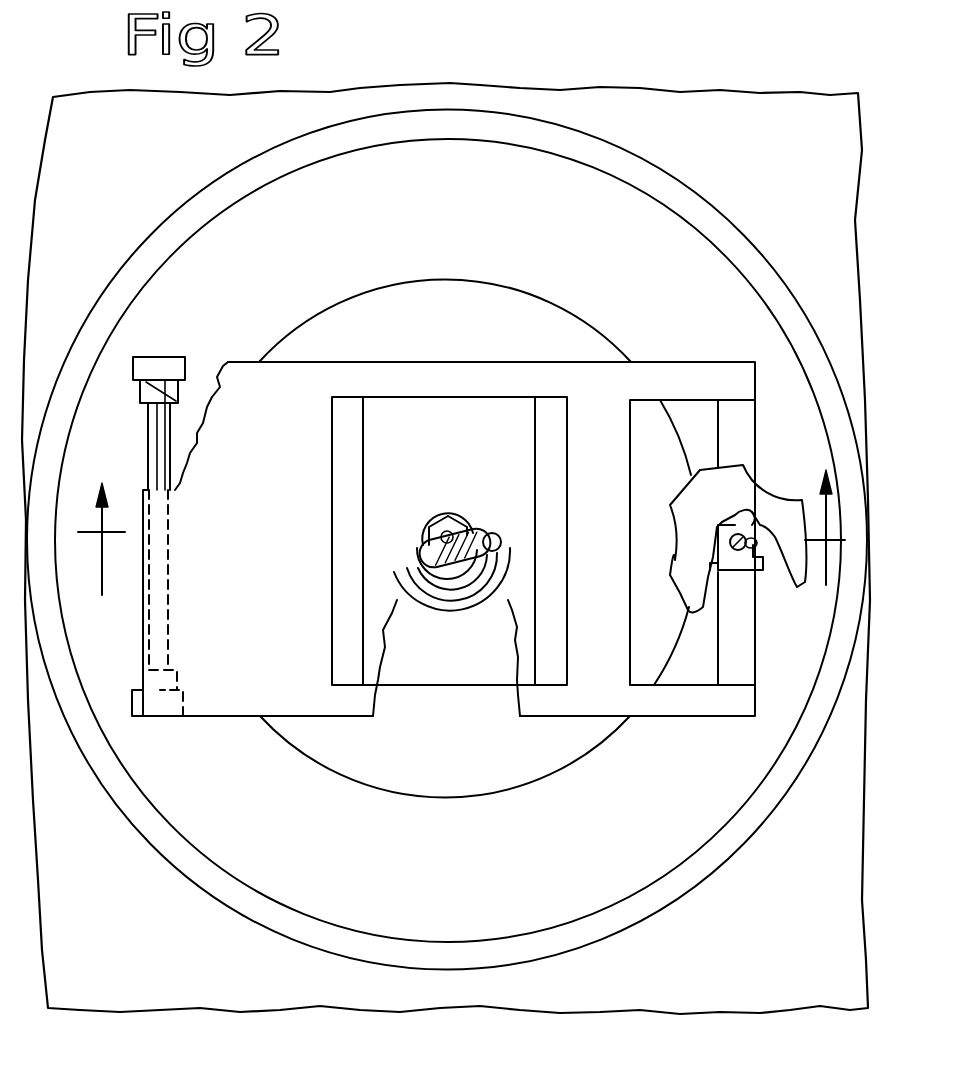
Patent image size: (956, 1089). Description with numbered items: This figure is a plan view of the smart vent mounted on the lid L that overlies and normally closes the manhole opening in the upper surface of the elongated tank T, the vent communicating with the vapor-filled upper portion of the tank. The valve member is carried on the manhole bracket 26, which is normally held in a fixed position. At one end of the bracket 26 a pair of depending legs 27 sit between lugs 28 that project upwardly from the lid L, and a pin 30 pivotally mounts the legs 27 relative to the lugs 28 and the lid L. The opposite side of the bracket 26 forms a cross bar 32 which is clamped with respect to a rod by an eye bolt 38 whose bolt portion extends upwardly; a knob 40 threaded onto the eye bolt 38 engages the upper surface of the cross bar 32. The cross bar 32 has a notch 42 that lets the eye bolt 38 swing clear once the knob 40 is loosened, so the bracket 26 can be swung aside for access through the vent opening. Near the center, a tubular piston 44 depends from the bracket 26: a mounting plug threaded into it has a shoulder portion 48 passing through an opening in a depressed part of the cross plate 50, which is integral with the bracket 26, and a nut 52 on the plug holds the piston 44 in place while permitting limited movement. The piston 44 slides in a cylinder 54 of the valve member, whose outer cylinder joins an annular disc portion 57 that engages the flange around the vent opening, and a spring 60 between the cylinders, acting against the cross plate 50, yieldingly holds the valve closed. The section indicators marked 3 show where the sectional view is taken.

The tank T is at (728, 978).
The lid L is at (667, 222).
The annular disc portion 57 is at (586, 758).
The manhole bracket 26 is at (682, 362).
The lugs 28 is at (165, 357).
The depending legs 27 is at (140, 403).
The pin 30 is at (171, 432).
The section line 3- 3 is at (821, 496).
The nut 52 is at (450, 516).
The spring 60 is at (417, 562).
The shoulder portion 48 is at (493, 541).
The cylinder 54 is at (440, 597).
The tubular post or piston 44 is at (470, 600).
The knob 40 is at (673, 590).
The cross plate 50 is at (618, 472).
The notch 42 is at (784, 572).
The cross bar 32 is at (755, 640).
The eye bolt 38 is at (735, 532).